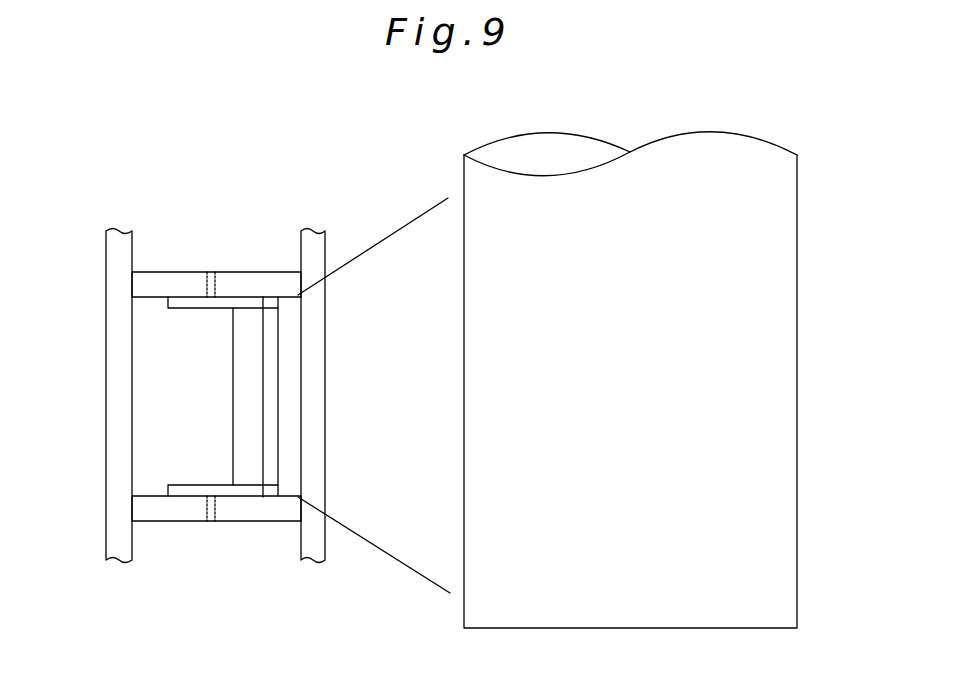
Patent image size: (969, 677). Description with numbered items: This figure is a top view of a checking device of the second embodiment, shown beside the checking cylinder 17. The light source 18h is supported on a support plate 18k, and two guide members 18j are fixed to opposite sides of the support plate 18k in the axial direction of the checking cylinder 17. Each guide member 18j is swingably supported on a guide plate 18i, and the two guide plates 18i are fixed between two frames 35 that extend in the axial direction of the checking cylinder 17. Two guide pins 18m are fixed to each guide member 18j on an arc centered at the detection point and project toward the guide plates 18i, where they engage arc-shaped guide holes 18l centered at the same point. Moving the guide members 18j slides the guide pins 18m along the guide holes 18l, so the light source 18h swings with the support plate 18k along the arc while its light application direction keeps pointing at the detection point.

The checking cylinder 17 is at (765, 481).
The frames 35 is at (118, 320).
The light source 18h is at (270, 366).
The guide plates 18i is at (151, 283).
The guide members 18j is at (220, 303).
The support plate 18k is at (240, 452).
The guide holes 18l is at (203, 272).
The guide pins 18m is at (213, 272).